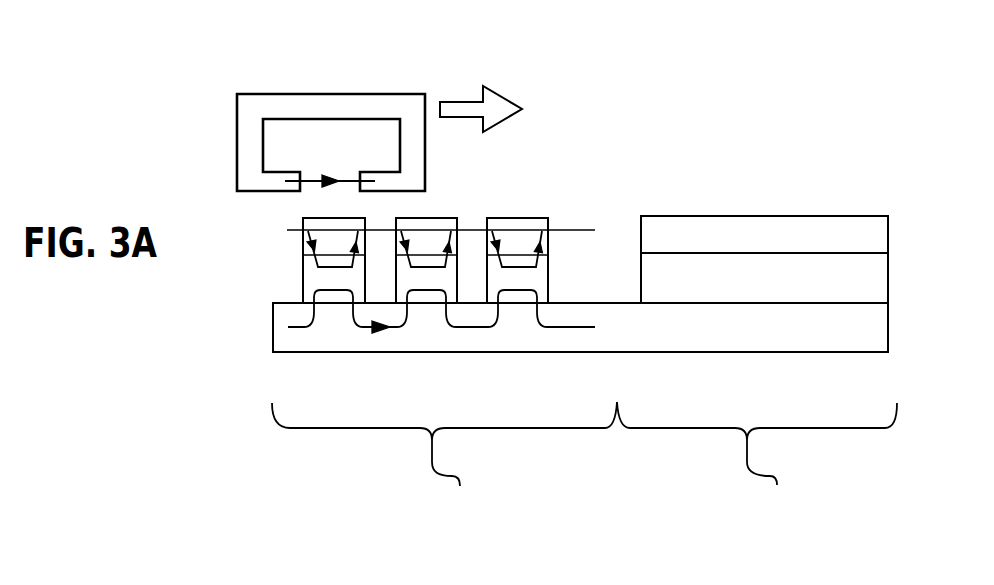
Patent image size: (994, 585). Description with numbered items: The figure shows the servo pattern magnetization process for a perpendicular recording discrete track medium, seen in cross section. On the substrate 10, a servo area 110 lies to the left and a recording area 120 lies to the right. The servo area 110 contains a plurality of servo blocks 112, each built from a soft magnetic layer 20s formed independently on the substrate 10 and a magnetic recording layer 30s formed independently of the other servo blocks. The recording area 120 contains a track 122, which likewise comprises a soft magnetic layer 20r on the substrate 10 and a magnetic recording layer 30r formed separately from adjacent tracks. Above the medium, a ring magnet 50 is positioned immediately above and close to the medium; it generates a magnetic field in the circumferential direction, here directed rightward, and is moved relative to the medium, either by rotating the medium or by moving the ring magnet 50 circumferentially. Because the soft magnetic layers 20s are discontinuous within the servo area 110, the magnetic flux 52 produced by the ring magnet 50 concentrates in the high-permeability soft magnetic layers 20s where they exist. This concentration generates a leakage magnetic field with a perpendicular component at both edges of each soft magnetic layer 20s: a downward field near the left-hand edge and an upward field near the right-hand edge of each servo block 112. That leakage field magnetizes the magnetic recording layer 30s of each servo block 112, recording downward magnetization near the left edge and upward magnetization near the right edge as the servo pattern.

The ring magnet 50 is at (408, 109).
The magnetic flux 52 is at (577, 230).
The servo block 112 is at (437, 271).
The magnetic recording layer 30s is at (427, 247).
The soft magnetic layer 20s is at (332, 297).
The track 122 is at (773, 223).
The magnetic recording layer 30r is at (699, 236).
The soft magnetic layer 20r is at (787, 275).
The substrate 10 is at (768, 333).
The servo area 110 is at (444, 458).
The recording area 120 is at (757, 458).